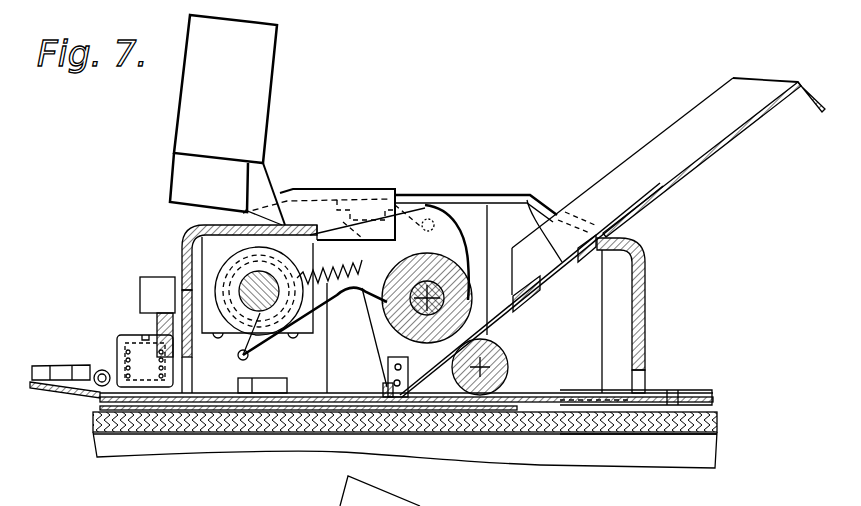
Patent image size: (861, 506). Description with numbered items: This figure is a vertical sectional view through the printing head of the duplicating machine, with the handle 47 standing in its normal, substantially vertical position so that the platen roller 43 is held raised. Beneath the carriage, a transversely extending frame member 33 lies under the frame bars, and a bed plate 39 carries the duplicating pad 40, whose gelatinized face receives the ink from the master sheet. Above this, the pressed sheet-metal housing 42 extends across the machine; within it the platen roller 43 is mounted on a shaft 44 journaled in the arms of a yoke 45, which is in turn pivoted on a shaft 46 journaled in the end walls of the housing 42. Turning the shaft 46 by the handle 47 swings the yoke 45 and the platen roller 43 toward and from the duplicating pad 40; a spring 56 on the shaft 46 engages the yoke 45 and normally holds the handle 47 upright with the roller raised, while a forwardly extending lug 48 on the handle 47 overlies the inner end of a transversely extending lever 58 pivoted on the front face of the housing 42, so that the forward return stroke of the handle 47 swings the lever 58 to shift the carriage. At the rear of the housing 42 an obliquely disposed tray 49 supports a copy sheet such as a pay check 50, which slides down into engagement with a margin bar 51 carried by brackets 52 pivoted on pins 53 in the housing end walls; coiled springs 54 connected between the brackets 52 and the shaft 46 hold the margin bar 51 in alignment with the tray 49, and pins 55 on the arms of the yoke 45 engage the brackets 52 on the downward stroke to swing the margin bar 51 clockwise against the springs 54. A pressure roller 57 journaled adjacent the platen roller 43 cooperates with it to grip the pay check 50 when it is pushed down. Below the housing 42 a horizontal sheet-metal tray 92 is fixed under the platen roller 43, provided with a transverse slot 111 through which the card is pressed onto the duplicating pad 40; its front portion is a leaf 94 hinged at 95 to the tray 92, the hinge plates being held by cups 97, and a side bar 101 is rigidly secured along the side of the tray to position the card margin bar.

The transversely extending frame member 33 is at (495, 410).
The bed plate 39 is at (647, 427).
The duplicating pad 40 is at (712, 420).
The housing 42 is at (645, 275).
The platen roller 43 is at (450, 258).
The shaft 44 is at (480, 318).
The yoke 45 is at (445, 228).
The shaft 46 is at (262, 350).
The handle 47 is at (270, 84).
The lug 48 is at (147, 280).
The tray 49 is at (712, 155).
The pay check 50 is at (529, 203).
The margin bar 51 is at (383, 388).
The brackets 52 is at (370, 297).
The pins 53 is at (397, 258).
The coiled springs 54 is at (325, 283).
The pins 55 is at (431, 218).
The spring 56 is at (220, 282).
The pressure roller 57 is at (507, 363).
The transversely extending lever 58 is at (157, 323).
The tray 92 is at (650, 407).
The leaf 94 is at (62, 396).
The hinges 95 is at (96, 372).
The cups 97 is at (118, 342).
The side bar 101 is at (58, 368).
The transverse slot 111 is at (447, 406).